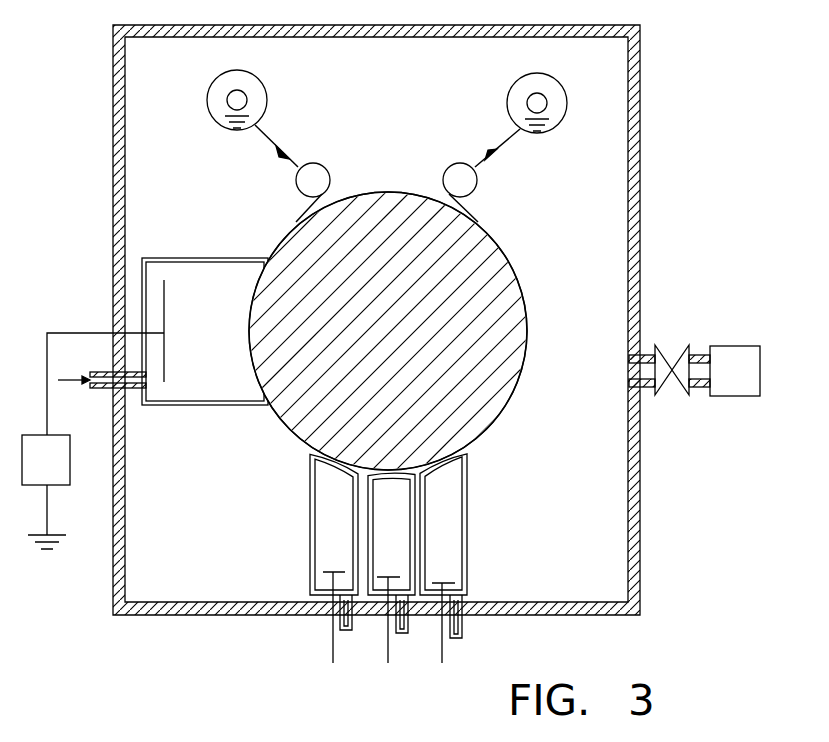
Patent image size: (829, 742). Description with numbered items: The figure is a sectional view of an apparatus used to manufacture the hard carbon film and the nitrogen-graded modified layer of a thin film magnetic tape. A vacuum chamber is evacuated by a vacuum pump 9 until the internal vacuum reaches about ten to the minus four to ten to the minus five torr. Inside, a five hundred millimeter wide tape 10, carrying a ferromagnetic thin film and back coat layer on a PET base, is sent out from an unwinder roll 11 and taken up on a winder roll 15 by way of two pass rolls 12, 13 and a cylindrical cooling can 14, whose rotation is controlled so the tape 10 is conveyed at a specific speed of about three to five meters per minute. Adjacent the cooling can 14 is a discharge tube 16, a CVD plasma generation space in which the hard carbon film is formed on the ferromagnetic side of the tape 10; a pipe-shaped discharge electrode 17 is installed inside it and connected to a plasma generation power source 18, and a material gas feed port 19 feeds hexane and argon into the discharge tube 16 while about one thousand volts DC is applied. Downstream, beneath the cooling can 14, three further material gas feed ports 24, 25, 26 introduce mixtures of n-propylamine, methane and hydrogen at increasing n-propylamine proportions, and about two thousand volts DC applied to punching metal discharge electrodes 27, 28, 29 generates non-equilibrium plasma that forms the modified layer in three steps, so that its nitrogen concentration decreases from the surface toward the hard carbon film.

The vacuum pump 9 is at (694, 370).
The tape 10 is at (300, 152).
The unwinder roll 11 is at (243, 97).
The pass roll 12 is at (313, 180).
The pass roll 13 is at (460, 180).
The cylindrical cooling can 14 is at (520, 302).
The winder roll 15 is at (530, 104).
The discharge tube 16 is at (180, 258).
The pipe-shaped discharge electrode 17 is at (166, 365).
The plasma generation power source 18 is at (93, 441).
The material gas feed port 19 is at (102, 364).
The material gas feed port 24 is at (347, 627).
The material gas feed port 25 is at (401, 630).
The material gas feed port 26 is at (456, 633).
The punching metal discharge electrode 27 is at (330, 570).
The punching metal discharge electrode 28 is at (400, 575).
The punching metal discharge electrode 29 is at (448, 582).